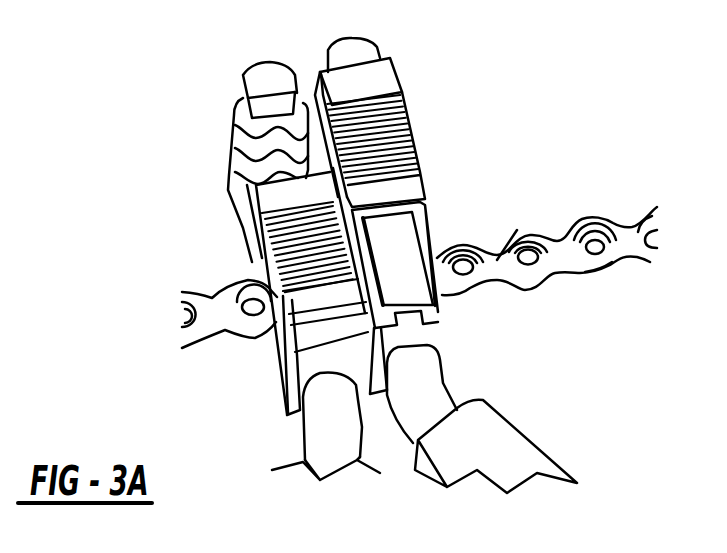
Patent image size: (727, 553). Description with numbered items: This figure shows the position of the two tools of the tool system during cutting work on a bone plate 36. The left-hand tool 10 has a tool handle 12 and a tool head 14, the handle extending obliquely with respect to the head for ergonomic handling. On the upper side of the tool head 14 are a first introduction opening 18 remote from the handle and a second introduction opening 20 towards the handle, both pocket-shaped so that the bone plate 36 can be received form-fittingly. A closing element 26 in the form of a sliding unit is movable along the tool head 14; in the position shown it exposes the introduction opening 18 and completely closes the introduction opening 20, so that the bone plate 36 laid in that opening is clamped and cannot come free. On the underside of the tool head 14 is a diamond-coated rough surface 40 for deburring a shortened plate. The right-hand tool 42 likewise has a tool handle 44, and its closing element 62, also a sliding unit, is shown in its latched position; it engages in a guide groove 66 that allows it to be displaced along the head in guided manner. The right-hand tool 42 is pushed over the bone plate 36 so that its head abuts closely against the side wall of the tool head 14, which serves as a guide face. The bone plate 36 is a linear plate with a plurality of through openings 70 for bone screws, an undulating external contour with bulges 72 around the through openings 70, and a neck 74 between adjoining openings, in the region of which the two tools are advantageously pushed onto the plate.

The left-hand tool 10 is at (112, 131).
The tool handle 12 is at (332, 450).
The tool head 14 is at (278, 393).
The first introduction opening 18 is at (235, 150).
The second introduction opening 20 is at (272, 354).
The closing element 26 is at (240, 245).
The bone plate 36 is at (567, 253).
The rough surface 40 is at (448, 333).
The right-hand tool 42 is at (438, 150).
The tool handle 44 is at (507, 463).
The closing element 62 is at (397, 72).
The guide groove 66 is at (410, 247).
The through openings 70 is at (600, 245).
The bulges 72 is at (600, 267).
The neck 74 is at (520, 230).